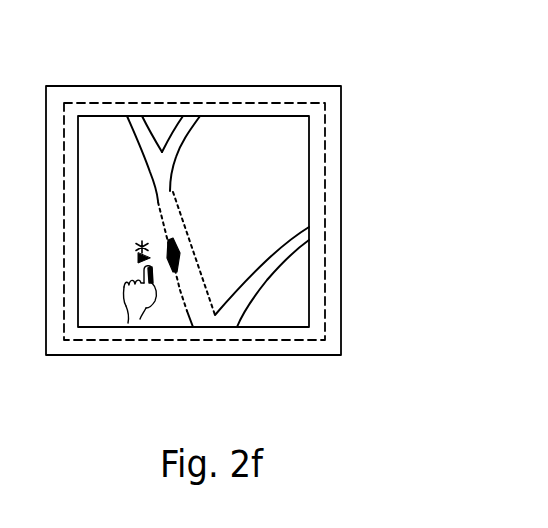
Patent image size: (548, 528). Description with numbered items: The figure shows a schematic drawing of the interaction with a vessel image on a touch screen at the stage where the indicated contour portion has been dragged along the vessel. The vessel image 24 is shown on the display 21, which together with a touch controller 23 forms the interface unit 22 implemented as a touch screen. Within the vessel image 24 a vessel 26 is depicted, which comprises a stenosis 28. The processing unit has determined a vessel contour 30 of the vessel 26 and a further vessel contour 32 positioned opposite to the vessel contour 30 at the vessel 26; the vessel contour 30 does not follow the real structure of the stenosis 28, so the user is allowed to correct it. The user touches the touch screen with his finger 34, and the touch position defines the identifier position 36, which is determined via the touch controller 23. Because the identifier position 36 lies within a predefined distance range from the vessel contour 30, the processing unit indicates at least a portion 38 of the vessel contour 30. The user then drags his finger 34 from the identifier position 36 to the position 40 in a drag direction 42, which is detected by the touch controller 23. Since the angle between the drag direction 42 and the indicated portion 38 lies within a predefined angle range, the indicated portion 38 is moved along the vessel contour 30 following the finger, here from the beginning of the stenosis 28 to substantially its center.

The display 21 is at (125, 117).
The interface unit 22 is at (274, 87).
The touch controller 23 is at (193, 102).
The vessel image 24 is at (287, 154).
The vessel 26 is at (172, 182).
The stenosis 28 is at (180, 247).
The vessel contour 30 is at (156, 210).
The further vessel contour 32 is at (177, 216).
The finger 34 is at (128, 323).
The identifier position 36 is at (138, 250).
The indicated portion of the vessel contour 38 is at (167, 245).
The position 40 is at (145, 265).
The drag direction 42 is at (139, 258).